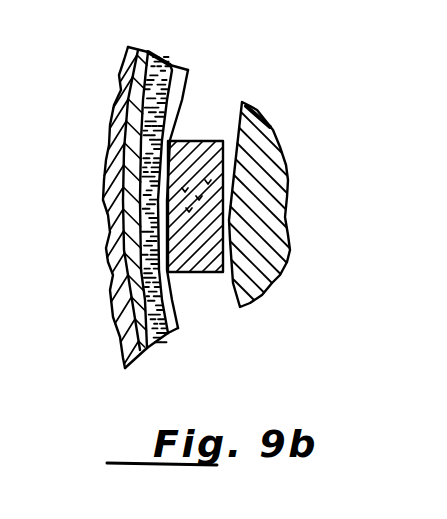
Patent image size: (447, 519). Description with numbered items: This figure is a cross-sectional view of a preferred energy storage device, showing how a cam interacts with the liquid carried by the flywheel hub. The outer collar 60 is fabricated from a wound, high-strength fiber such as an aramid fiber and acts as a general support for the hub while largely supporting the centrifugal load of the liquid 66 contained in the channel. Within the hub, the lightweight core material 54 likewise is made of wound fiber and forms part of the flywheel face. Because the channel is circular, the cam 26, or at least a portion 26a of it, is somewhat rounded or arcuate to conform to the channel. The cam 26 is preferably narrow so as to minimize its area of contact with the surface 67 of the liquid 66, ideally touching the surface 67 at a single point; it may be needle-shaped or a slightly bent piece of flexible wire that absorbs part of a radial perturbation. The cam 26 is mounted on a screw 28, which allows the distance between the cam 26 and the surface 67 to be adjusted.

The collar 60 is at (119, 123).
The portion of cam 26a is at (108, 222).
The liquid 66 is at (172, 95).
The surface of liquid 67 is at (168, 110).
The cam 26 is at (203, 250).
The screw 28 is at (226, 183).
The core material 54 is at (148, 346).